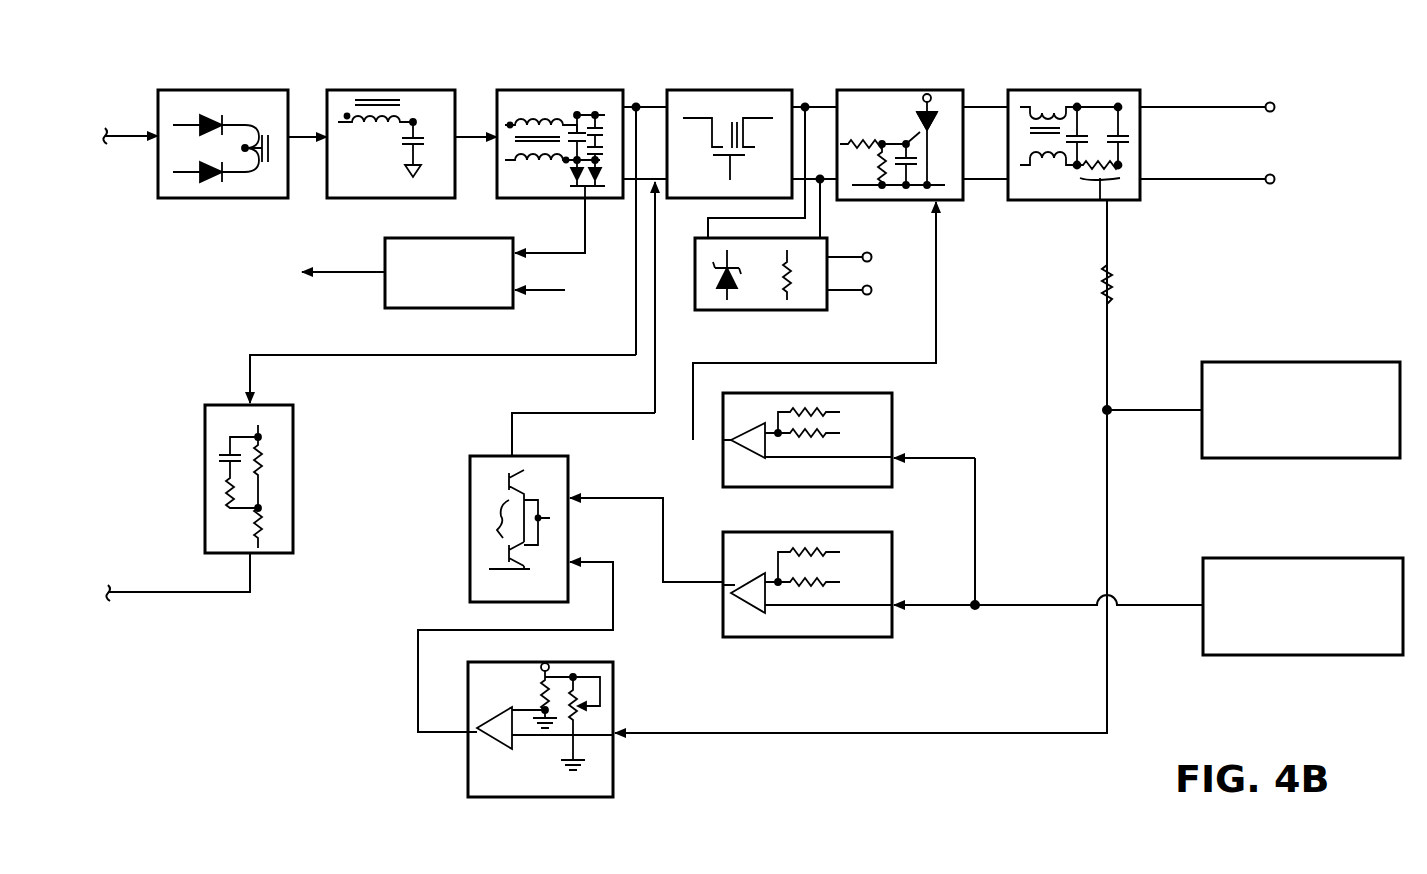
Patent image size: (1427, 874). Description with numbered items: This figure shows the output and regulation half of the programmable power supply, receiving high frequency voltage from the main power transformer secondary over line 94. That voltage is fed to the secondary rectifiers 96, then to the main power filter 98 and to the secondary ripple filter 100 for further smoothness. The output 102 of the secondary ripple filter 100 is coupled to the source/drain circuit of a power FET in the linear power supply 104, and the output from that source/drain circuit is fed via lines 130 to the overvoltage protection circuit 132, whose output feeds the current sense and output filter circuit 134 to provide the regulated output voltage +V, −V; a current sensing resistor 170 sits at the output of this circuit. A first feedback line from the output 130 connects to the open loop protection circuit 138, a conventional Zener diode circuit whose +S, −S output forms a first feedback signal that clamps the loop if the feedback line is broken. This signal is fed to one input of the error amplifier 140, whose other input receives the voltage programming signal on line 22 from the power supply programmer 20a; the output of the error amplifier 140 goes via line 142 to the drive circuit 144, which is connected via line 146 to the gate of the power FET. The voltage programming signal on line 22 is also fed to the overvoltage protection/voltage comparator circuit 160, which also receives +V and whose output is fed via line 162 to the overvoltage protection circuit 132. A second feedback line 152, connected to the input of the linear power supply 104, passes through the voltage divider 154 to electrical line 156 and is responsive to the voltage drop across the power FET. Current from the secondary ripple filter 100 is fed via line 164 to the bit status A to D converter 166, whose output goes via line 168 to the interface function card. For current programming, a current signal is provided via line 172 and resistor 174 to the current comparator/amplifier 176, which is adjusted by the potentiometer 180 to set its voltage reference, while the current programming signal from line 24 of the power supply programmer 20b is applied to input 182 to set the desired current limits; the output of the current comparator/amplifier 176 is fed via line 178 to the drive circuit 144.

The line 94 is at (134, 130).
The secondary rectifiers 96 is at (282, 94).
The main power filter 98 is at (450, 92).
The secondary ripple filter 100 is at (608, 92).
The output of the secondary ripple filter 102 is at (637, 136).
The linear power supply 104 is at (778, 90).
The lines 130 is at (822, 102).
The overvoltage protection circuit 132 is at (960, 98).
The current sense and output filter circuit 134 is at (1126, 92).
The current sensing resistor 170 is at (1100, 168).
The line 164 is at (584, 226).
The A to D converter 166 is at (466, 308).
The line 168 is at (356, 276).
The open loop protection circuit 138 is at (828, 300).
The line 162 is at (936, 310).
The line 172 is at (1107, 237).
The resistor 174 is at (1108, 288).
The power supply programmer 20b is at (1274, 362).
The line 24 is at (1156, 408).
The electrical line 152 is at (438, 356).
The line 146 is at (654, 386).
The voltage divider 154 is at (290, 470).
The electrical line 156 is at (166, 592).
The drive circuit 144 is at (563, 478).
The line 142 is at (700, 582).
The line 178 is at (438, 630).
The overvoltage protection/voltage comparator circuit 160 is at (892, 420).
The error amplifier 140 is at (883, 620).
The line 22 is at (1168, 602).
The power supply programmer 20a is at (1275, 568).
The input 182 is at (620, 732).
The current comparator/amplifier 176 is at (615, 778).
The potentiometer 180 is at (584, 718).